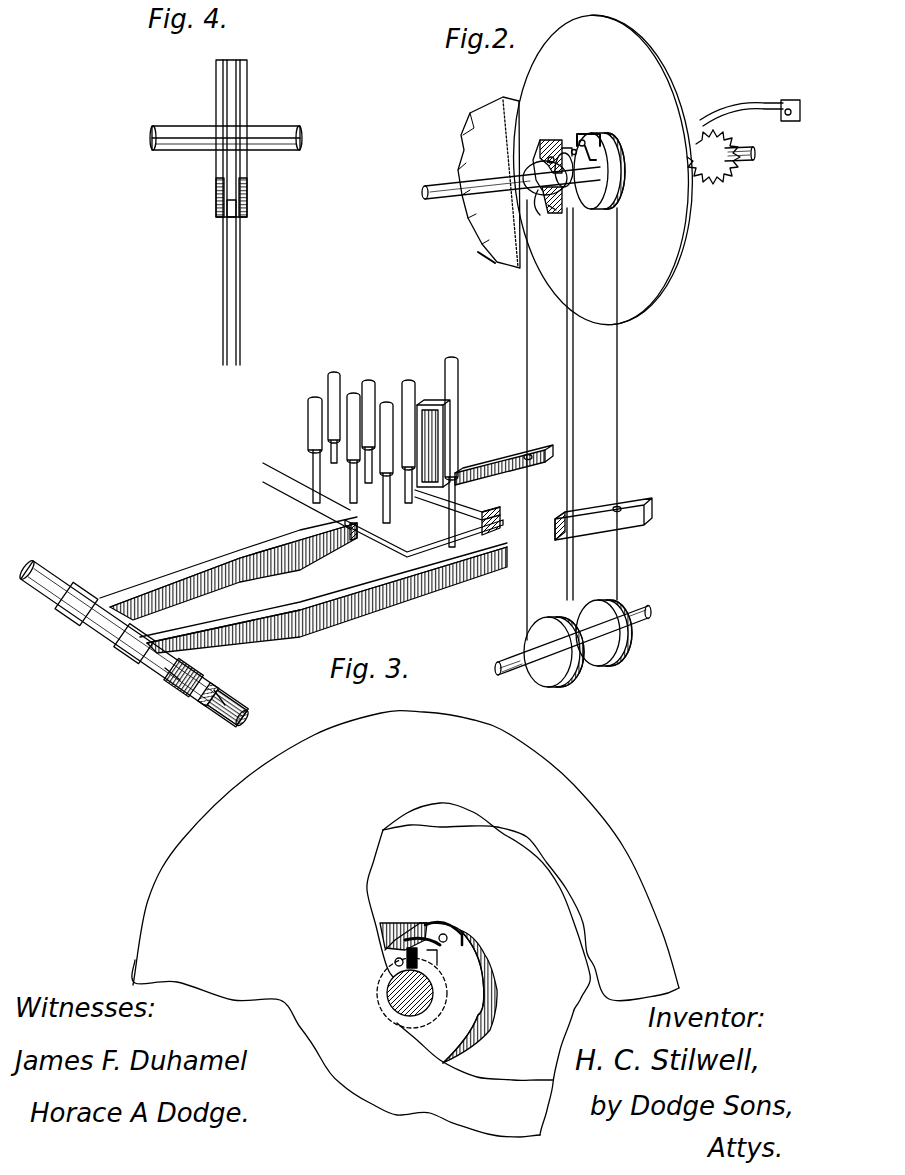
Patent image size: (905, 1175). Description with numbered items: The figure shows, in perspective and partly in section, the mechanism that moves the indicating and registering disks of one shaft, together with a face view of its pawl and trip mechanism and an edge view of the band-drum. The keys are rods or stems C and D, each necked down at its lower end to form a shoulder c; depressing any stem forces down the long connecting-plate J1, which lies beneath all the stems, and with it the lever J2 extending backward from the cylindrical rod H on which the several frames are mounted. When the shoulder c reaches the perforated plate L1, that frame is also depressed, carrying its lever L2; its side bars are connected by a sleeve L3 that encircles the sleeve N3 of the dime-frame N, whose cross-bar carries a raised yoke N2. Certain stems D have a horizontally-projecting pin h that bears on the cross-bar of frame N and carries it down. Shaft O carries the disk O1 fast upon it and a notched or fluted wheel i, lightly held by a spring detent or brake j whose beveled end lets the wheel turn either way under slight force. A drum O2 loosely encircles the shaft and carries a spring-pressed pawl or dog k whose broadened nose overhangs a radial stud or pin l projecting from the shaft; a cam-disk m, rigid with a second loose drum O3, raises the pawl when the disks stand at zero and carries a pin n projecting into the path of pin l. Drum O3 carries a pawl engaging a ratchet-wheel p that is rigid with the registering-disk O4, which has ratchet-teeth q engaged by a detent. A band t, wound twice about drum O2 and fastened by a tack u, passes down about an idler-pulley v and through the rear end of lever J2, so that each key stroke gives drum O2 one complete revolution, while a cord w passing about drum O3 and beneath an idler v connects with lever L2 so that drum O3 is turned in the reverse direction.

In FIG. 4, the shaft O is at (289, 128).
In FIG. 2, the shaft O is at (455, 190).
In FIG. 2, the disk O1 is at (602, 170).
In FIG. 3, the disk O1 is at (405, 924).
In FIG. 4, the disk or drum O2 is at (216, 108).
In FIG. 2, the disk or drum O2 is at (599, 171).
In FIG. 3, the disk or drum O2 is at (437, 993).
In FIG. 2, the disk or drum O3 is at (556, 143).
In FIG. 3, the disk or drum O3 is at (398, 918).
In FIG. 2, the registering-disk O4 is at (488, 262).
In FIG. 3, the registering-disk O4 is at (486, 969).
In FIG. 2, the ratchet-teeth q is at (475, 146).
In FIG. 2, the pawl k is at (590, 140).
In FIG. 3, the pawl k is at (440, 928).
In FIG. 2, the radial stud or pin l is at (592, 158).
In FIG. 3, the radial stud or pin l is at (435, 960).
In FIG. 2, the pin or stud n is at (566, 146).
In FIG. 3, the pin or stud n is at (395, 963).
In FIG. 2, the cam-disk m is at (548, 207).
In FIG. 3, the cam-disk m is at (405, 955).
In FIG. 2, the ratchet-wheel p is at (542, 216).
In FIG. 2, the notched or fluted wheel i is at (721, 157).
In FIG. 2, the spring detent or brake j is at (765, 103).
In FIG. 4, the band or cord t is at (241, 273).
In FIG. 2, the band or cord t is at (575, 360).
In FIG. 2, the cord or band w is at (528, 411).
In FIG. 4, the tack u is at (224, 217).
In FIG. 2, the idler-pulley v is at (573, 643).
In FIG. 2, the horizontally-projecting pin h is at (477, 474).
In FIG. 2, the frame N is at (486, 512).
In FIG. 2, the raised yoke N2 is at (433, 405).
In FIG. 2, the sleeve N3 is at (219, 691).
In FIG. 2, the plate L1 is at (424, 536).
In FIG. 2, the bar or lever L2 is at (275, 548).
In FIG. 2, the sleeve L3 is at (168, 672).
In FIG. 2, the connecting-plate J1 is at (433, 585).
In FIG. 2, the lever or bar J2 is at (347, 592).
In FIG. 2, the cylindrical rod or stem H is at (247, 704).
In FIG. 2, the rods or stems D is at (308, 433).
In FIG. 2, the rods or stems C is at (375, 385).
In FIG. 2, the shoulder c is at (312, 456).